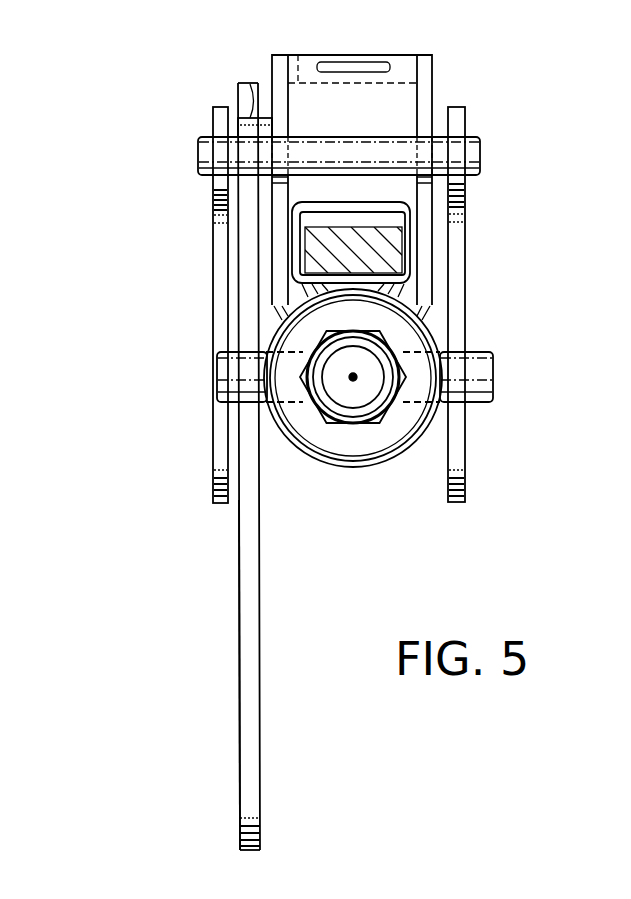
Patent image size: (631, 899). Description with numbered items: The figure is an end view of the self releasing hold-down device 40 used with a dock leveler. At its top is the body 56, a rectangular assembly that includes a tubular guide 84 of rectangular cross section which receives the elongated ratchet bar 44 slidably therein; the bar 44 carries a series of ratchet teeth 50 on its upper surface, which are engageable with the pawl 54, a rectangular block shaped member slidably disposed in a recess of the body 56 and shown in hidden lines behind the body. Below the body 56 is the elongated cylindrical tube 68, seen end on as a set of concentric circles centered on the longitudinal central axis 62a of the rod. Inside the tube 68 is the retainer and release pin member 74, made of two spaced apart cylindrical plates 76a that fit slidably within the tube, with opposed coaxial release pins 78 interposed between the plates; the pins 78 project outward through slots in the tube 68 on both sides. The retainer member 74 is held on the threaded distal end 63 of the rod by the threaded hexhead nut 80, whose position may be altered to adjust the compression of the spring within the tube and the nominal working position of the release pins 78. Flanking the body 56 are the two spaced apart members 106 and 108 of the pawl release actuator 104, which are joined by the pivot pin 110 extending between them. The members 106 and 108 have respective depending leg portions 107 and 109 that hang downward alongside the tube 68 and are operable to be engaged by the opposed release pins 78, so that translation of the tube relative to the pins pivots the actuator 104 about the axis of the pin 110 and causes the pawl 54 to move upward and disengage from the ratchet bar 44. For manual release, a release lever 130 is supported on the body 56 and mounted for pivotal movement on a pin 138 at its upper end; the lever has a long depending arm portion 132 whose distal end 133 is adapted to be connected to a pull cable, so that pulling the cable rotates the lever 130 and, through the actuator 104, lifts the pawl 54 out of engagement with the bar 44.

The hold-down device 40 is at (118, 182).
The elongated bar 44 is at (315, 248).
The ratchet teeth 50 is at (338, 212).
The pawl 54 is at (297, 54).
The body 56 is at (434, 99).
The longitudinal central axis 62a is at (353, 377).
The threaded distal end 63 is at (315, 352).
The elongated cylindrical tube 68 is at (303, 457).
The retainer and release pin member 74 is at (351, 453).
The cylindrical plates 76a is at (388, 428).
The release pins 78 is at (217, 380).
The threaded hexhead nut 80 is at (355, 332).
The tubular guide 84 is at (380, 197).
The pawl release actuator 104 is at (208, 120).
The spaced apart member 106 is at (467, 200).
The depending leg portion 107 is at (467, 482).
The spaced apart member 108 is at (210, 192).
The depending leg portion 109 is at (213, 463).
The pivot pin 110 is at (382, 135).
The release lever 130 is at (236, 579).
The depending arm portion 132 is at (258, 720).
The distal end 133 is at (240, 828).
The pin 138 is at (252, 115).